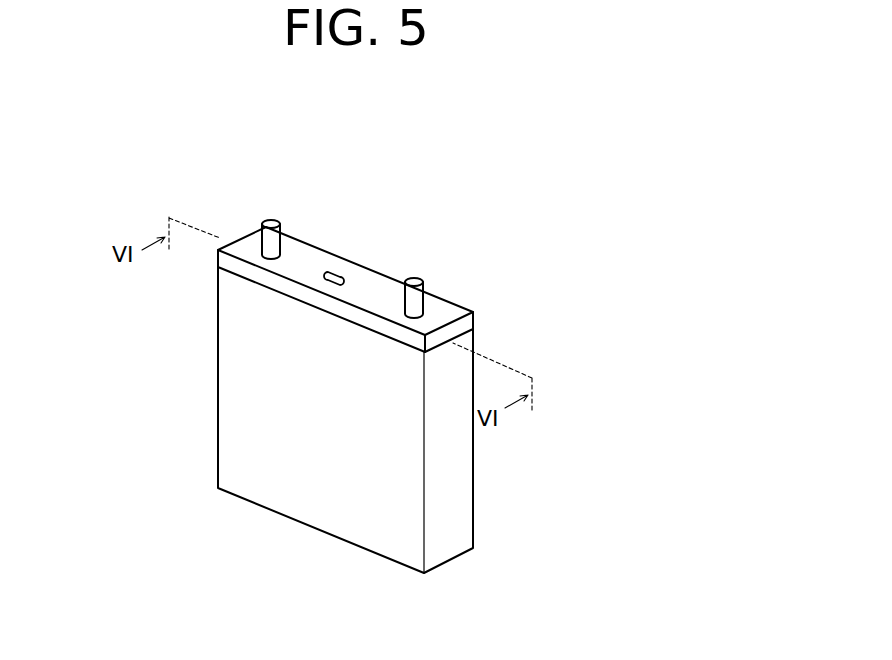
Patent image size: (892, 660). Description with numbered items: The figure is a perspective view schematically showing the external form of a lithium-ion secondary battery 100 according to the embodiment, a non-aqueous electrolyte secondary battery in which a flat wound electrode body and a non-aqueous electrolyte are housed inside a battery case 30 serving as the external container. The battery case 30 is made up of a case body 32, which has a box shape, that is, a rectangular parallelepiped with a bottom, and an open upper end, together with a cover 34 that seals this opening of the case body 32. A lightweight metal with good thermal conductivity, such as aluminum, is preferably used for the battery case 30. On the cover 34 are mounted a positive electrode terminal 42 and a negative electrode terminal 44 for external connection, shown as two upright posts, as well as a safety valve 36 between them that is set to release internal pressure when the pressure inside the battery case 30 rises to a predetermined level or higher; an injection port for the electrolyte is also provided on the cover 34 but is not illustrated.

The lithium-ion secondary battery 100 is at (588, 185).
The battery case 30 is at (321, 497).
The case body 32 is at (467, 512).
The cover 34 is at (472, 318).
The safety valve 36 is at (333, 270).
The positive electrode terminal 42 is at (276, 219).
The negative electrode terminal 44 is at (418, 280).